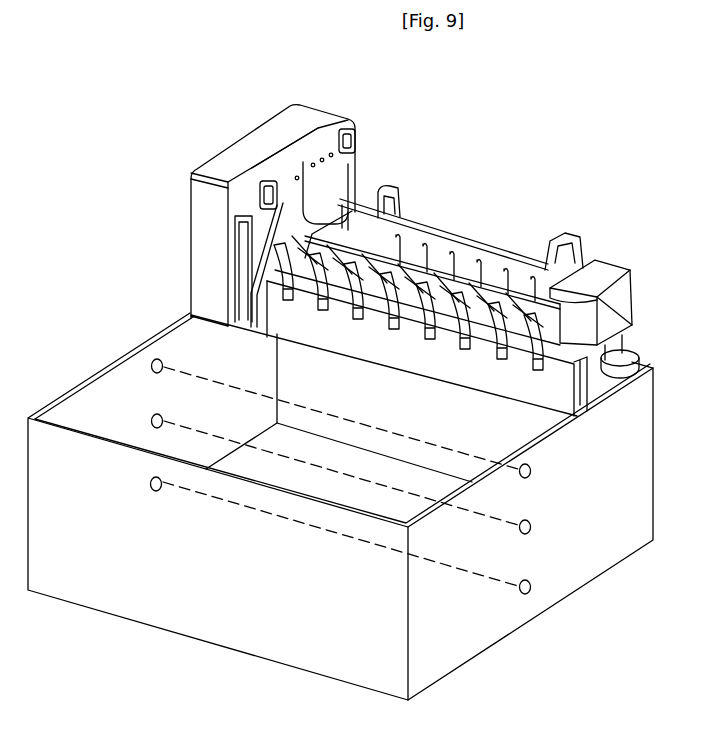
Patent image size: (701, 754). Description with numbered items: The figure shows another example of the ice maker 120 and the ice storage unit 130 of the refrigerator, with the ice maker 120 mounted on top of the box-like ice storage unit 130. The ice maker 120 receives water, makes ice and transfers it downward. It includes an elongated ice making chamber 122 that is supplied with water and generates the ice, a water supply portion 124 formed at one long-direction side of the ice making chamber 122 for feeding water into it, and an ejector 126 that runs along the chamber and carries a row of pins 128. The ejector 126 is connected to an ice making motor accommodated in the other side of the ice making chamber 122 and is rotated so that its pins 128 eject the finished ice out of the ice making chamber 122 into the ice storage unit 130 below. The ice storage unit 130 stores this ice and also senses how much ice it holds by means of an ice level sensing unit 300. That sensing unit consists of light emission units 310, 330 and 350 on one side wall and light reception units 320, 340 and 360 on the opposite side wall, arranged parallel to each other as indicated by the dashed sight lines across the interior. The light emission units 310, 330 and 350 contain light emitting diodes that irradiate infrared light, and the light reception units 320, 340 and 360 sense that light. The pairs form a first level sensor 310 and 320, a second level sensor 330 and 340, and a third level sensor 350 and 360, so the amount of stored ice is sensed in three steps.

The ice maker 120 is at (347, 112).
The ice making chamber 122 is at (493, 261).
The water supply portion 124 is at (606, 277).
The ejector 126 is at (409, 253).
The pins 128 is at (389, 237).
The ice storage unit 130 is at (281, 608).
The fastening structure 300 is at (153, 407).
The light emission unit 310 is at (157, 358).
The light reception unit 320 is at (532, 474).
The light emission unit 330 is at (152, 425).
The light reception unit 340 is at (532, 529).
The light emission unit 350 is at (156, 494).
The light reception unit 360 is at (531, 590).